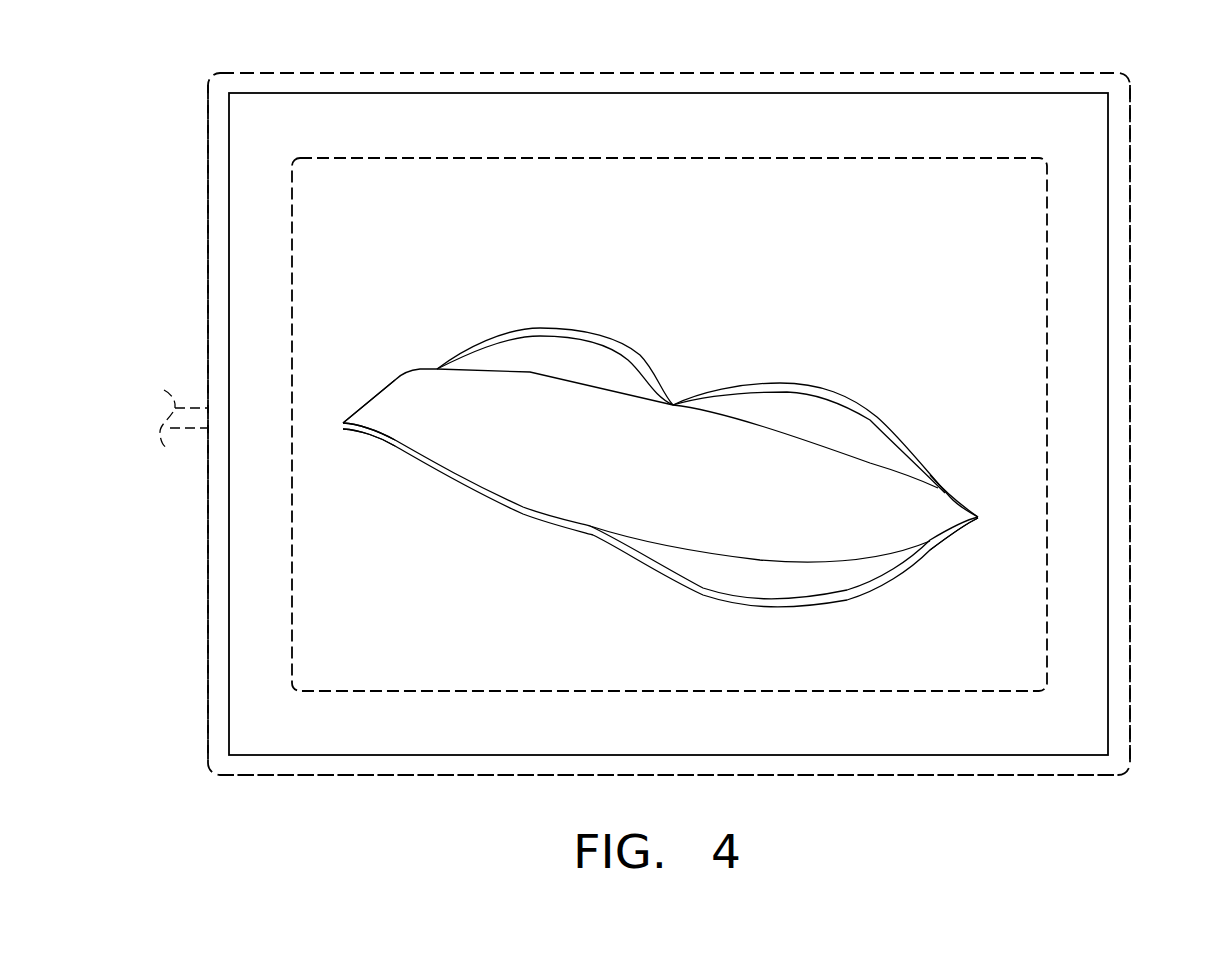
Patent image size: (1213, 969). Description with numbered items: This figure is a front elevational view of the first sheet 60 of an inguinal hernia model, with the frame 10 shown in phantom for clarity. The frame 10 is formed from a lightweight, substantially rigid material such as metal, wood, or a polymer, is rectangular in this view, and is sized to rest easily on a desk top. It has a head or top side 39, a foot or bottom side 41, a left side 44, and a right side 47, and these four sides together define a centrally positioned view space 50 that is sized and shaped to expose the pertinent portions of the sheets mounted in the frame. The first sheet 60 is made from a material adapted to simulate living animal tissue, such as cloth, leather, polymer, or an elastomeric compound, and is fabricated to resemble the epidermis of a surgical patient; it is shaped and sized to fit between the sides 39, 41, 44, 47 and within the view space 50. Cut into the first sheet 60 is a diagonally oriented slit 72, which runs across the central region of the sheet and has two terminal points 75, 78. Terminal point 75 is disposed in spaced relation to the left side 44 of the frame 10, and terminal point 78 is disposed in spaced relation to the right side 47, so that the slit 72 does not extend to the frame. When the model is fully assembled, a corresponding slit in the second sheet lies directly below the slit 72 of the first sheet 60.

The frame 10 is at (1133, 139).
The head or top side 39 is at (568, 76).
The foot or bottom side 41 is at (851, 772).
The left side 44 is at (1124, 443).
The right side 47 is at (207, 263).
The centrally positioned view space 50 is at (1046, 342).
The first sheet 60 is at (383, 627).
The diagonally oriented slit 72 is at (879, 414).
The terminal point 75 is at (343, 424).
The terminal point 78 is at (978, 517).